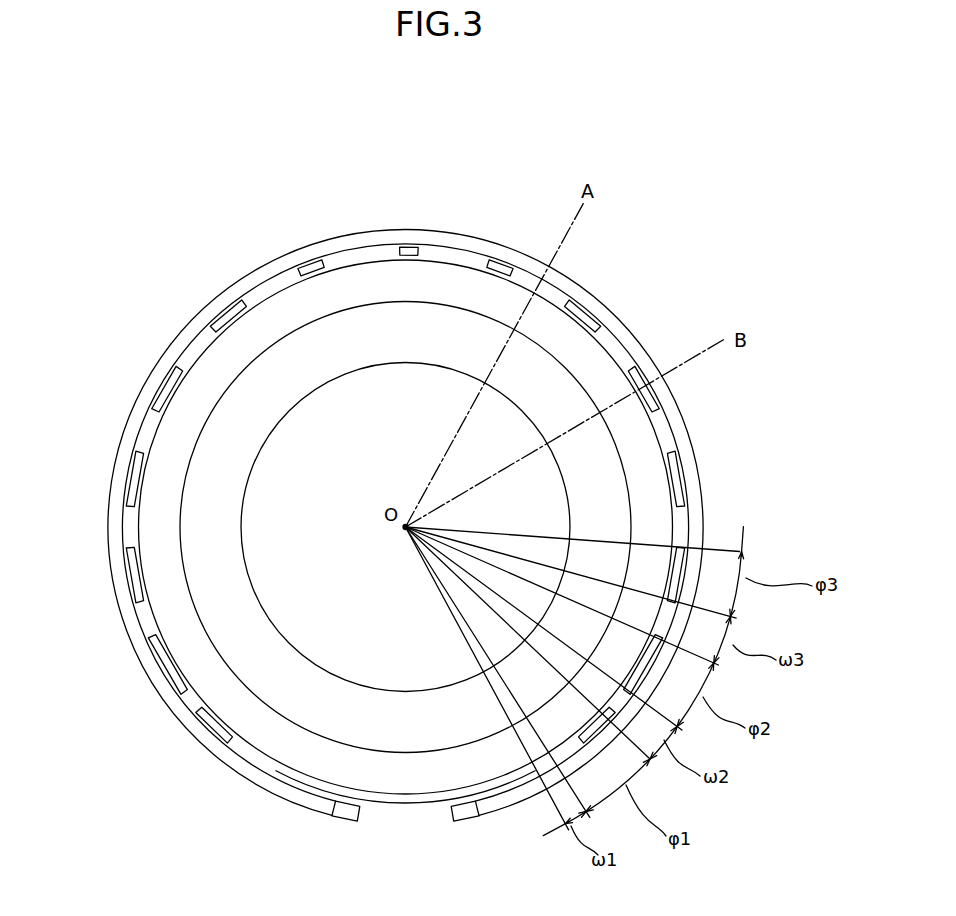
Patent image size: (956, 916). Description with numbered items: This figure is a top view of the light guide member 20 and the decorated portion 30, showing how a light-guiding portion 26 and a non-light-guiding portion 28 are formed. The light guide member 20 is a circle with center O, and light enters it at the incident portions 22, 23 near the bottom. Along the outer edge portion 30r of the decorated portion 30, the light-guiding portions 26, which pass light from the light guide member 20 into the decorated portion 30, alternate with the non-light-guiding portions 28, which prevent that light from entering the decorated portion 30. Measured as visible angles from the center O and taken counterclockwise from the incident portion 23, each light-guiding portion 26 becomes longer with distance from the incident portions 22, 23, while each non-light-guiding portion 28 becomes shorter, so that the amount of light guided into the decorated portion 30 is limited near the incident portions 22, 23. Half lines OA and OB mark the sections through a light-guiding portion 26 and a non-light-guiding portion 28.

The light guide member 20 is at (503, 801).
The incident portion 22 is at (352, 823).
The incident portion 23 is at (463, 823).
The light-guiding portion 26 is at (130, 621).
The non-light-guiding portion 28 is at (223, 740).
The decorated portion 30 is at (220, 470).
The outer edge portion 30r is at (456, 252).